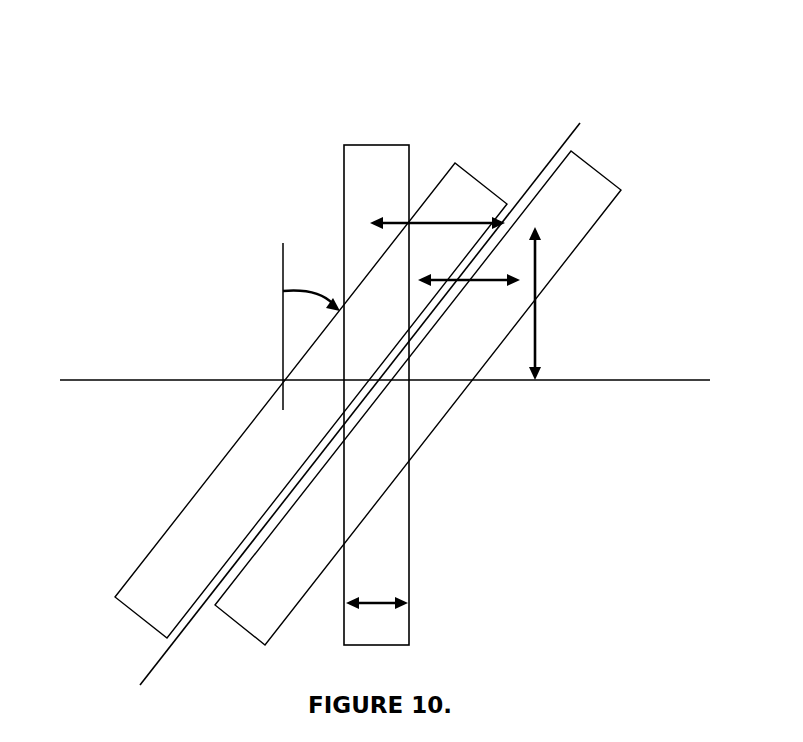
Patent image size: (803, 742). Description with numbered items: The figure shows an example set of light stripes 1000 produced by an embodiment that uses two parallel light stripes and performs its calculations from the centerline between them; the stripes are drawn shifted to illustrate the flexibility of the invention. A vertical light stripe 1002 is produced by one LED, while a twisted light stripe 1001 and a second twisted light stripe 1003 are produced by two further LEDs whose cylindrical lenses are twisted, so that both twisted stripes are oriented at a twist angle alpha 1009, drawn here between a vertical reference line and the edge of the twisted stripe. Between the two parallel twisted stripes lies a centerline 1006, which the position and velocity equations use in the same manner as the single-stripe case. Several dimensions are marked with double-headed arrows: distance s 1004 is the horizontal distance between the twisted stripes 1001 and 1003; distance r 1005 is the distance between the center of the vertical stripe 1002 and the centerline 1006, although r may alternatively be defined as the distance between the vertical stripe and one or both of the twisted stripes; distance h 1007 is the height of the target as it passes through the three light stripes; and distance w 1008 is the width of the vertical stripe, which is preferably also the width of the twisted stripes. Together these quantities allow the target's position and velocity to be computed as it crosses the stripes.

The set of light stripes 1000 is at (130, 88).
The twisted light stripe 1001 is at (434, 187).
The vertical light stripe 1002 is at (343, 158).
The second twisted light stripe 1003 is at (580, 252).
The distance s 1004 is at (484, 281).
The distance r 1005 is at (503, 221).
The centerline 1006 is at (582, 125).
The distance h 1007 is at (538, 332).
The distance w 1008 is at (372, 603).
The twist angle alpha 1009 is at (283, 292).